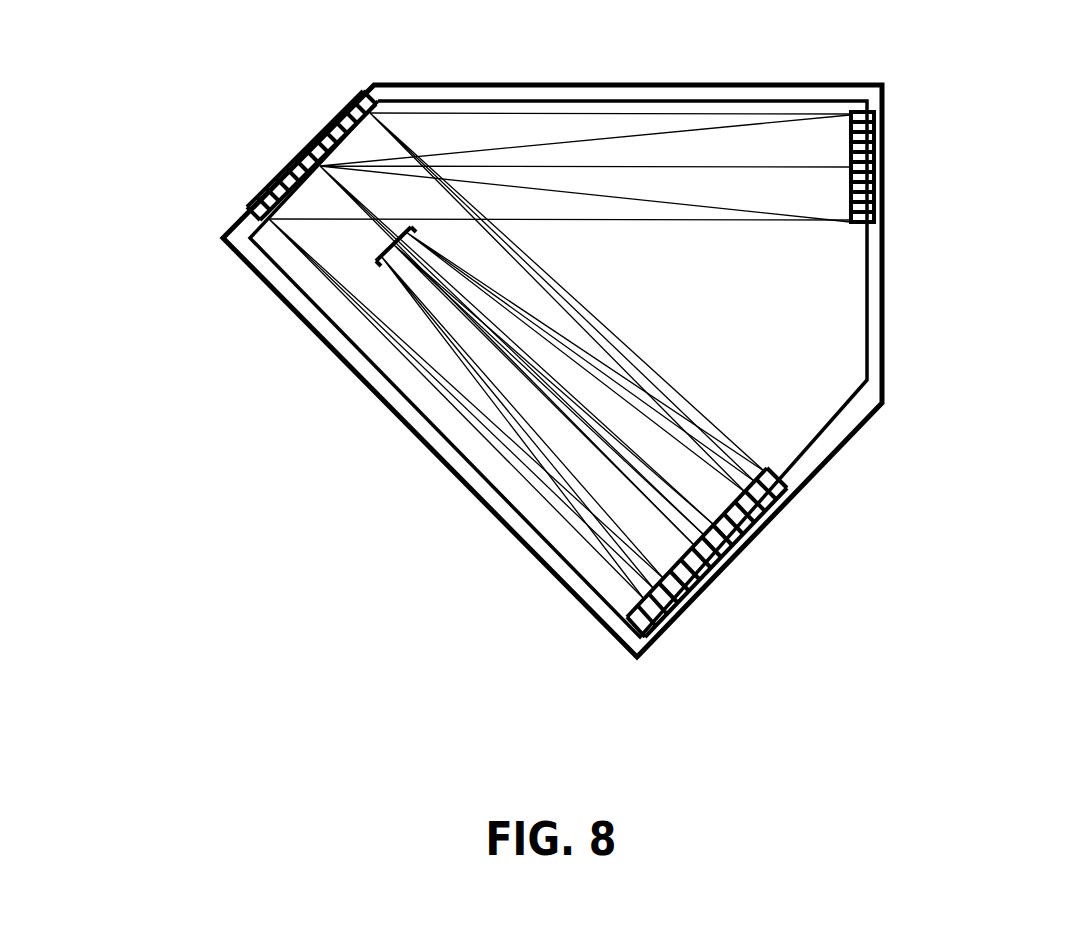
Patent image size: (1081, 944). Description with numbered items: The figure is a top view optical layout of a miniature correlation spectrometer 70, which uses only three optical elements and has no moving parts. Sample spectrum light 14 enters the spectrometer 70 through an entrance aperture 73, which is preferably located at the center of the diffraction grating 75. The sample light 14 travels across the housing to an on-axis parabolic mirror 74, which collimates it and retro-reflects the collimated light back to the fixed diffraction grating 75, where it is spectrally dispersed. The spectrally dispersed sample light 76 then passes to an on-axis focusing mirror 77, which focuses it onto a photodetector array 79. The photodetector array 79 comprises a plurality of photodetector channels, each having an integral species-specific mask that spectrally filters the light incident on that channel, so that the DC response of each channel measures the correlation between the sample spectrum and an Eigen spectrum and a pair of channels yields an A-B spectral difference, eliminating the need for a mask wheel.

The miniature correlation spectrometer 70 is at (758, 340).
The entrance aperture 73 is at (290, 136).
The on-axis parabolic mirror 74 is at (880, 177).
The fixed diffraction grating 75 is at (263, 189).
The spectrally dispersed sample light 76 is at (572, 293).
The on-axis focusing mirror 77 is at (700, 587).
The photodetector array 79 is at (372, 280).
The sample spectrum light 14 is at (527, 143).